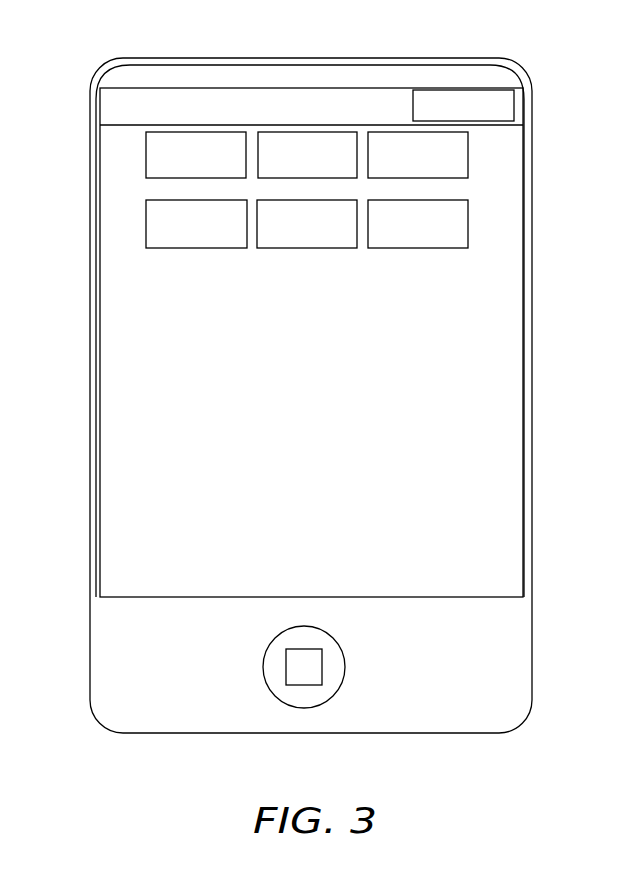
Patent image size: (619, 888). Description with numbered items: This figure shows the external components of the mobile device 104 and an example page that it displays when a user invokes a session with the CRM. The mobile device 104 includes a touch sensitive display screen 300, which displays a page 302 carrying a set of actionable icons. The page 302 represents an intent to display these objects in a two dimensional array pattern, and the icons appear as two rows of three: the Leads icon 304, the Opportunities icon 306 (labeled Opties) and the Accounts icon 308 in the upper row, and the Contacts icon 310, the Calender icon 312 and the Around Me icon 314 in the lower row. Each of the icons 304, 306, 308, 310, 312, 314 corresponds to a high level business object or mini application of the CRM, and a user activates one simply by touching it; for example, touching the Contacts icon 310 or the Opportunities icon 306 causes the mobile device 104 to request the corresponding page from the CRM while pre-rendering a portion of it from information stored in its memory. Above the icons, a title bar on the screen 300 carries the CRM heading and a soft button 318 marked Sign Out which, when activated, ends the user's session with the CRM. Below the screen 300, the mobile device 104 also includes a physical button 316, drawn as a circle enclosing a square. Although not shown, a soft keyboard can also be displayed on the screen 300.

The mobile device 104 is at (487, 57).
The touch sensitive display screen 300 is at (493, 398).
The page 302 is at (328, 396).
The actionable icon 304 is at (146, 153).
The Opportunities icon 306 is at (276, 131).
The actionable icon 308 is at (468, 157).
The Contacts icon 310 is at (193, 248).
The actionable icon 312 is at (303, 248).
The actionable icon 314 is at (407, 248).
The physical button 316 is at (345, 668).
The soft button 318 is at (413, 110).